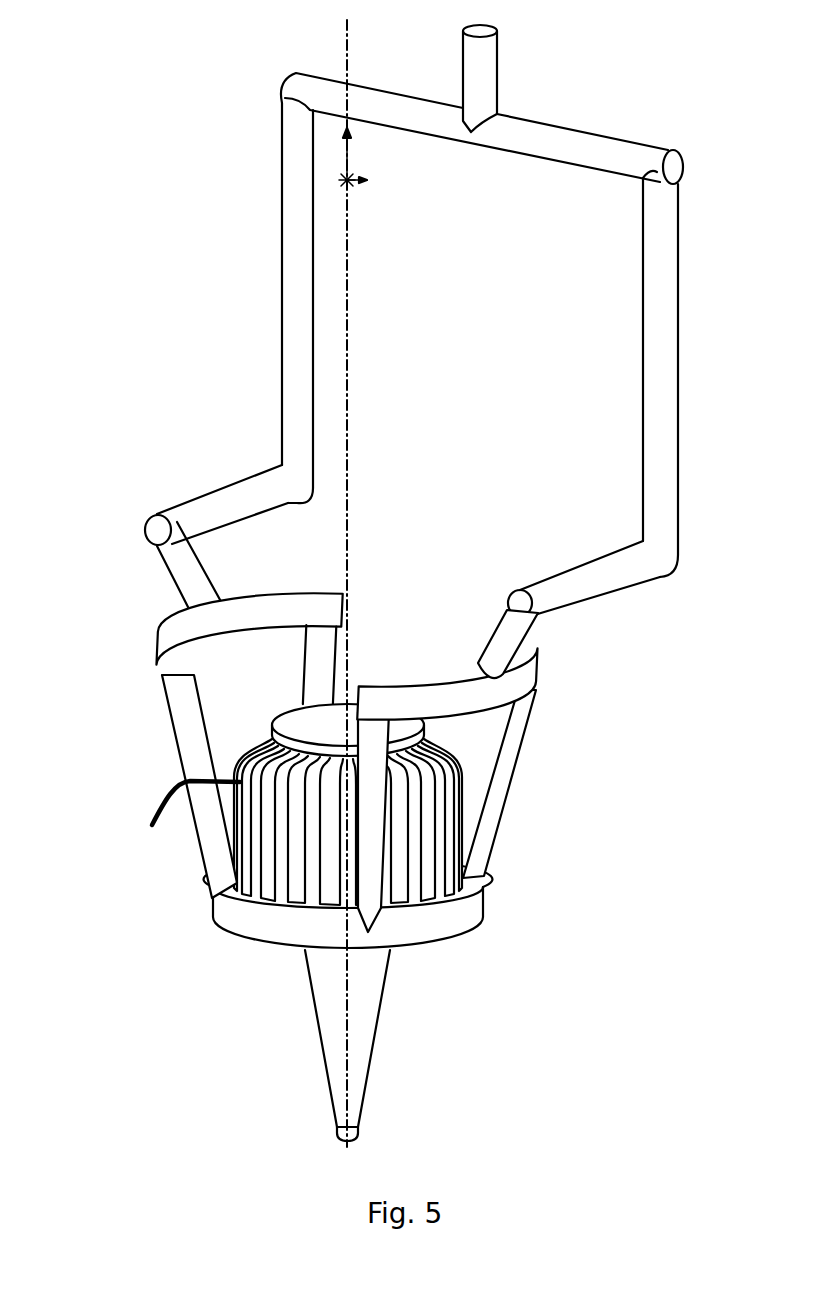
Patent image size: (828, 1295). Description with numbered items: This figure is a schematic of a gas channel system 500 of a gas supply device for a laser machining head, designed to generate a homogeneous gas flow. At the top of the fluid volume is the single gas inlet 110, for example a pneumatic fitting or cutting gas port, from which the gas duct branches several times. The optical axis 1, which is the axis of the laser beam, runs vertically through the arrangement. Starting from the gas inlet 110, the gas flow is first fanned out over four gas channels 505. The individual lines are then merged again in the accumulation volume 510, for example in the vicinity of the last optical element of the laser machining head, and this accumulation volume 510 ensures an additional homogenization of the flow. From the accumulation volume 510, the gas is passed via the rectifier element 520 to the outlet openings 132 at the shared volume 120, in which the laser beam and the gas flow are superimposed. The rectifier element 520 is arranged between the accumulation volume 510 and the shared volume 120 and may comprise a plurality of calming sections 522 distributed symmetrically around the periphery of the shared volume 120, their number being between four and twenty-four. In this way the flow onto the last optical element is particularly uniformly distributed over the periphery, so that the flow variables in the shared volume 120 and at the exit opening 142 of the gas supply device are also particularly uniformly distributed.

The gas channel system 500 is at (97, 117).
The gas inlet 110 is at (490, 52).
The optical axis 1 is at (347, 295).
The gas channels 505 is at (515, 722).
The rectifier element 520 is at (362, 804).
The calming sections 522 is at (438, 793).
The outlet opening 132 is at (179, 819).
The accumulation volume 510 is at (475, 893).
The shared volume 120 is at (385, 990).
The exit opening 142 is at (358, 1132).